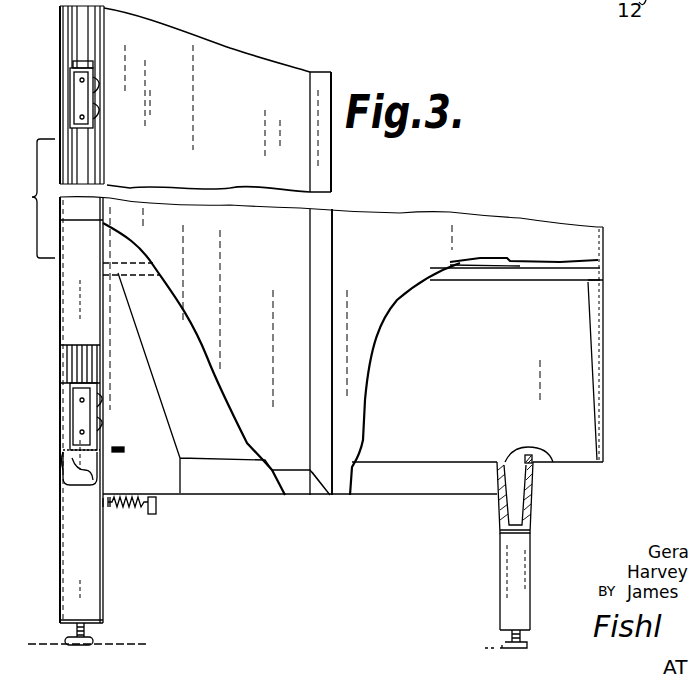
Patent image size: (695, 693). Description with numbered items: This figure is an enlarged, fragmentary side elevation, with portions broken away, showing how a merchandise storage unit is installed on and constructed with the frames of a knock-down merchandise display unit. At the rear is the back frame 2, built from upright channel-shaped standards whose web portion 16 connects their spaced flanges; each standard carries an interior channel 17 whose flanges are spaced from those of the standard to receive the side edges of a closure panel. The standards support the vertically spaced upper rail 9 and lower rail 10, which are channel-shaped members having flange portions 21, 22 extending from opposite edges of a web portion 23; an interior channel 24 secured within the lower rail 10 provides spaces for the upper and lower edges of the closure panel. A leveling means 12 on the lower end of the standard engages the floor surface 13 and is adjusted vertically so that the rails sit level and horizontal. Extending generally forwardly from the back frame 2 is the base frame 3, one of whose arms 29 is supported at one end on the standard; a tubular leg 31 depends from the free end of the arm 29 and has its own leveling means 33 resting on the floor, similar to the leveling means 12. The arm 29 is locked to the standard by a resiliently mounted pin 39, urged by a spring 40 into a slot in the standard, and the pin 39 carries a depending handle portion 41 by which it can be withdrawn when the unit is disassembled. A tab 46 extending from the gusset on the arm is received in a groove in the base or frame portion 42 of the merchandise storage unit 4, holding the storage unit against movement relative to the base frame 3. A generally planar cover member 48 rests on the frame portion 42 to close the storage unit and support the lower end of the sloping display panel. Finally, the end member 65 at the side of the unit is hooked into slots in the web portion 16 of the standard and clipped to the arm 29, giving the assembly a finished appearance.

The back frame 2 is at (53, 68).
The base frame 3 is at (434, 502).
The merchandise storage unit 4 is at (606, 341).
The upper rail 9 is at (78, 95).
The lower rail 10 is at (63, 468).
The leveling means 12 is at (95, 640).
The floor surface 13 is at (465, 630).
The web portion 16 is at (92, 555).
The interior channel 17 is at (85, 363).
The flange portion 21 is at (88, 83).
The flange portion 22 is at (70, 80).
The web portion 23 is at (78, 58).
The interior channel 24 is at (90, 415).
The arm 29 is at (476, 488).
The leg 31 is at (523, 563).
The leveling means 33 is at (527, 638).
The resiliently mounted pin 39 is at (155, 497).
The spring 40 is at (133, 507).
The handle portion 41 is at (153, 513).
The base or frame portion 42 is at (540, 458).
The tab 46 is at (125, 450).
The cover member 48 is at (483, 268).
The end member 65 is at (297, 222).